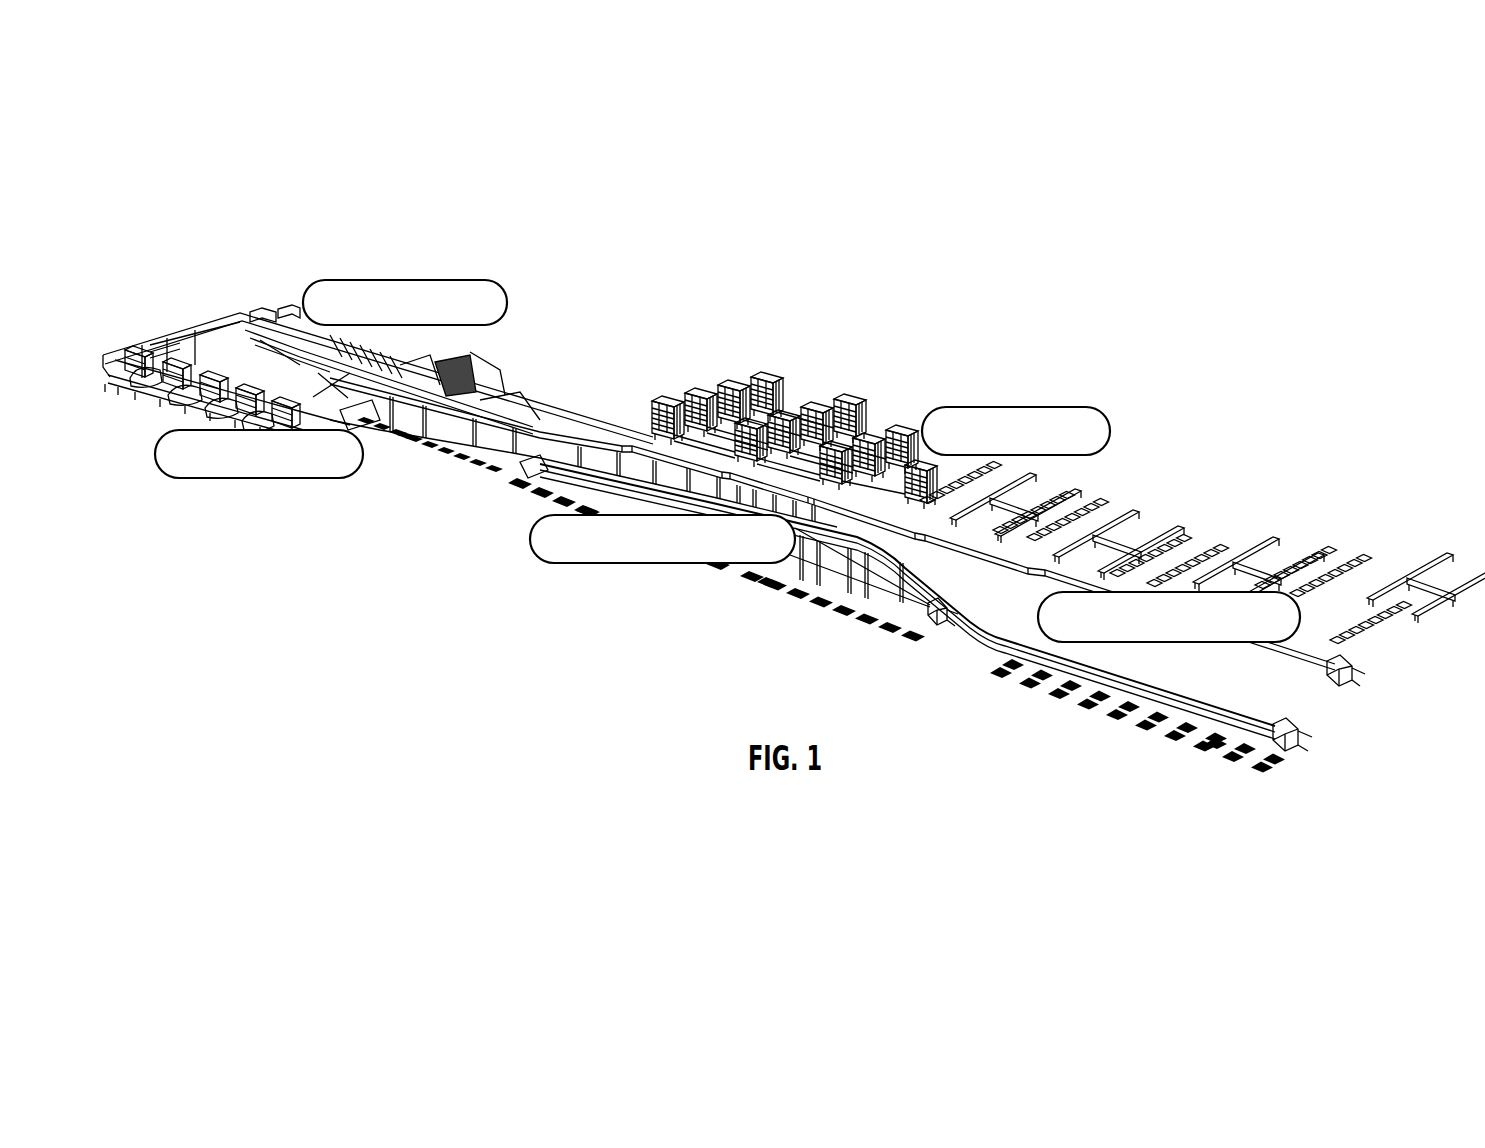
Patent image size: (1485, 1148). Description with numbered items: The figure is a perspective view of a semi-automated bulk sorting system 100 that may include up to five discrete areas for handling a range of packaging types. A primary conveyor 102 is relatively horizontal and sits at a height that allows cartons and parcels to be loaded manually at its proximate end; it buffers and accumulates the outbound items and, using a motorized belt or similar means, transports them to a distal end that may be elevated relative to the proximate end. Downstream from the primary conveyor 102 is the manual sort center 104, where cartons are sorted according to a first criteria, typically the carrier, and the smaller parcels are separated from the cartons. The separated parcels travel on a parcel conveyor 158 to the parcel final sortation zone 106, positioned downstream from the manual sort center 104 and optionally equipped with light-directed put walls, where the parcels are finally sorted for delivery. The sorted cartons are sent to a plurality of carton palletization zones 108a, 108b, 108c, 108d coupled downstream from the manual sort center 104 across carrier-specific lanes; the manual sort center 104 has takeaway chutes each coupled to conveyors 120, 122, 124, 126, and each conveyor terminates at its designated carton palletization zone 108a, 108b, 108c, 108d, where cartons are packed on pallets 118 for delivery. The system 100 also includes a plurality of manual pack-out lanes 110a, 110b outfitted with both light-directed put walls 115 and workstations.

The system 100 is at (794, 503).
The primary conveyor 102 is at (505, 375).
The manual sort center 104 is at (395, 245).
The parcel final sortation zone 106 is at (146, 443).
The carton palletization zone 108a is at (463, 497).
The carton palletization zone 108b is at (605, 627).
The carton palletization zone 108c is at (848, 638).
The carton palletization zone 108d is at (1077, 743).
The manual pack-out lane 110a is at (825, 421).
The manual pack-out lane 110b is at (1193, 459).
The light-directed put walls 115 is at (663, 404).
The pallets 118 is at (398, 442).
The conveyor 120 is at (1170, 688).
The conveyor 122 is at (528, 472).
The conveyor 124 is at (933, 623).
The conveyor 126 is at (353, 410).
The parcel conveyor 158 is at (183, 322).